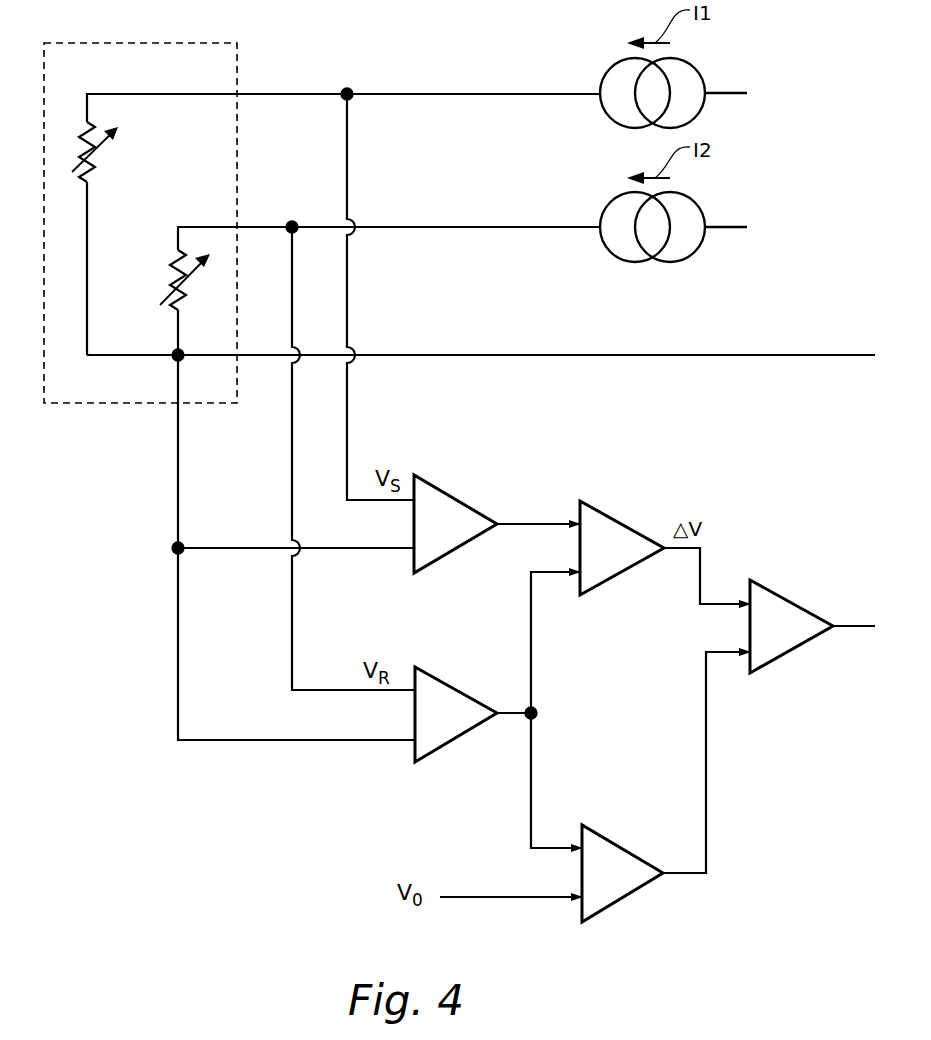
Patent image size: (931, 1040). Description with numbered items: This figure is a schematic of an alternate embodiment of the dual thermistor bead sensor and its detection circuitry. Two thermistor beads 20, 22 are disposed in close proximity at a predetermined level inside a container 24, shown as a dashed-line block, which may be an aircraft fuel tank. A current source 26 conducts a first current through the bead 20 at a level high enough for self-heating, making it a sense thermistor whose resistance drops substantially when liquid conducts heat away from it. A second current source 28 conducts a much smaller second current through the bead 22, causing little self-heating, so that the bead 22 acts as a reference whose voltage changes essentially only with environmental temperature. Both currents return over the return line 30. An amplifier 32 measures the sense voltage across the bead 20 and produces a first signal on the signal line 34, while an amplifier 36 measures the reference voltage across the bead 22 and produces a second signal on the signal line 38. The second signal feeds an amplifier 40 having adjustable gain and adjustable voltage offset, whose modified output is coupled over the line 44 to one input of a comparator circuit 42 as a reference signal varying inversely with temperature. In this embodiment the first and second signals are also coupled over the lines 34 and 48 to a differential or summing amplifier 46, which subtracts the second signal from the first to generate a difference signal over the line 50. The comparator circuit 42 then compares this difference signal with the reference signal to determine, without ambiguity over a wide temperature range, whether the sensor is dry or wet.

The thermistor bead 20 is at (97, 170).
The thermistor bead 22 is at (170, 272).
The container 24 is at (115, 404).
The current source 26 is at (690, 78).
The current source 28 is at (692, 210).
The return line 30 is at (553, 355).
The amplifier 32 is at (455, 500).
The signal line 34 is at (536, 522).
The amplifier 36 is at (455, 688).
The signal line 38 is at (532, 785).
The amplifier 40 is at (625, 898).
The comparator circuit 42 is at (795, 655).
The line 44 is at (707, 773).
The differential or summing amplifier 46 is at (620, 580).
The line 48 is at (530, 608).
The line 50 is at (703, 580).